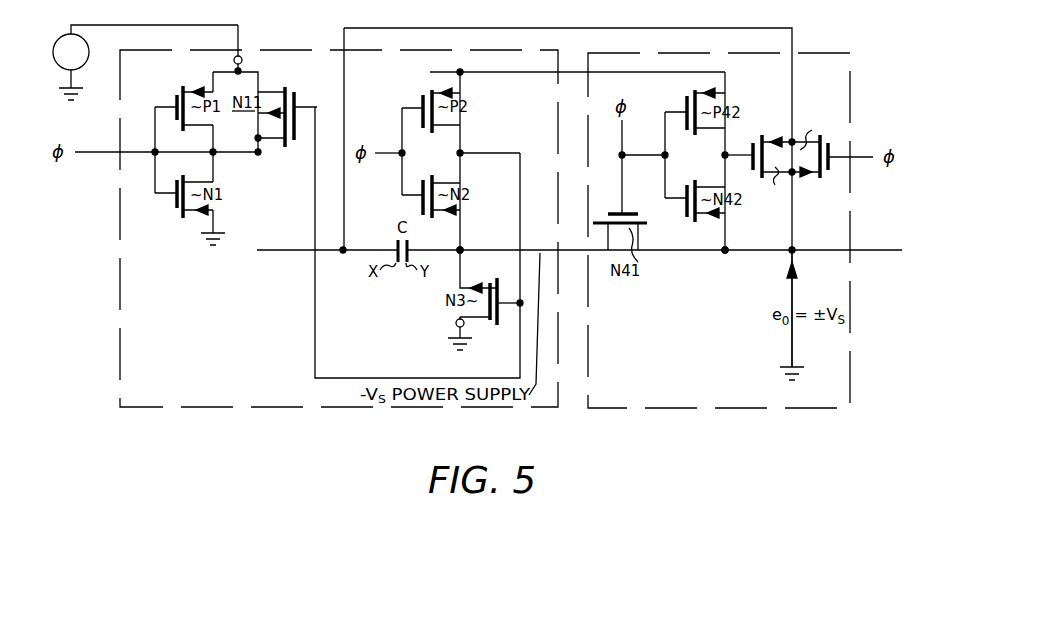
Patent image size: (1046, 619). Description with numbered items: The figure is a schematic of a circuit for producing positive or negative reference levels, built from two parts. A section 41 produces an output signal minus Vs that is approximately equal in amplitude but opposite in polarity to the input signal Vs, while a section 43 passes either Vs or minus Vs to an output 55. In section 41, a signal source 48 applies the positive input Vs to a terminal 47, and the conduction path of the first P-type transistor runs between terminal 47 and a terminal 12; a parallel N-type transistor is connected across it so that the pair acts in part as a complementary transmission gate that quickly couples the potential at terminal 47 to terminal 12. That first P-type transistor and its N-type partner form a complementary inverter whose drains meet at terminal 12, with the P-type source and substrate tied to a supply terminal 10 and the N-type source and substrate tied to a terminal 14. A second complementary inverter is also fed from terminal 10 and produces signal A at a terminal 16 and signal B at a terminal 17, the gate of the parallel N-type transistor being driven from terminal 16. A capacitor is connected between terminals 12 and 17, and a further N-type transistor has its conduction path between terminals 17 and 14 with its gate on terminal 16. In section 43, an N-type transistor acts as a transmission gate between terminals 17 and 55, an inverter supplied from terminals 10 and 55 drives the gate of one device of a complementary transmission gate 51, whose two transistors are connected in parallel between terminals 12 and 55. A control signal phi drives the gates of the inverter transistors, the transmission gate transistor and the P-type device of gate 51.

The terminal 10 is at (462, 74).
The terminal 12 is at (215, 154).
The terminal 14 is at (456, 324).
The terminal 16 is at (462, 151).
The terminal 17 is at (462, 248).
The section 41 is at (273, 392).
The section 43 is at (722, 398).
The terminal 47 is at (243, 60).
The signal source 48 is at (145, 62).
The complementary transmission gate 51 is at (823, 214).
The output 55 is at (722, 252).